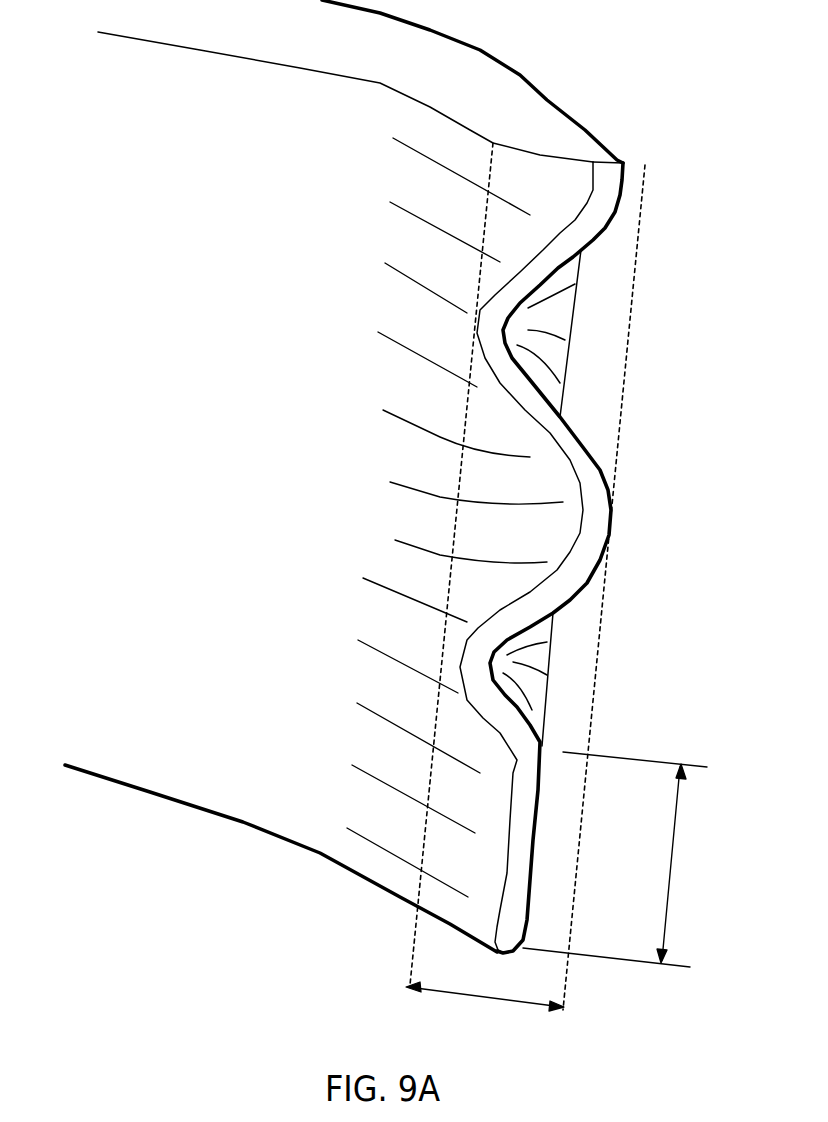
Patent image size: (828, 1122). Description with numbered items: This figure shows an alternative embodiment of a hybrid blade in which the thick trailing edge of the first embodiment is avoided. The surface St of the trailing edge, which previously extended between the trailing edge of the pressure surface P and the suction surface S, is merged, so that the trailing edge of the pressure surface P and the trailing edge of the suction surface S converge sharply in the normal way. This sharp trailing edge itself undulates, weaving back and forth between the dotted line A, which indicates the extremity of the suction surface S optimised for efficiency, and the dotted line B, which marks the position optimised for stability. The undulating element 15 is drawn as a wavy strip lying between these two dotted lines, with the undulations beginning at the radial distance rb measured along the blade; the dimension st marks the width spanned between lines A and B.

The sealing strip 15 is at (610, 183).
The suction surface s is at (617, 213).
The line A is at (622, 407).
The line B is at (410, 930).
The pressure surface p is at (108, 463).
The radial distance rb is at (615, 859).
The surface of the trailing edge st is at (485, 1010).